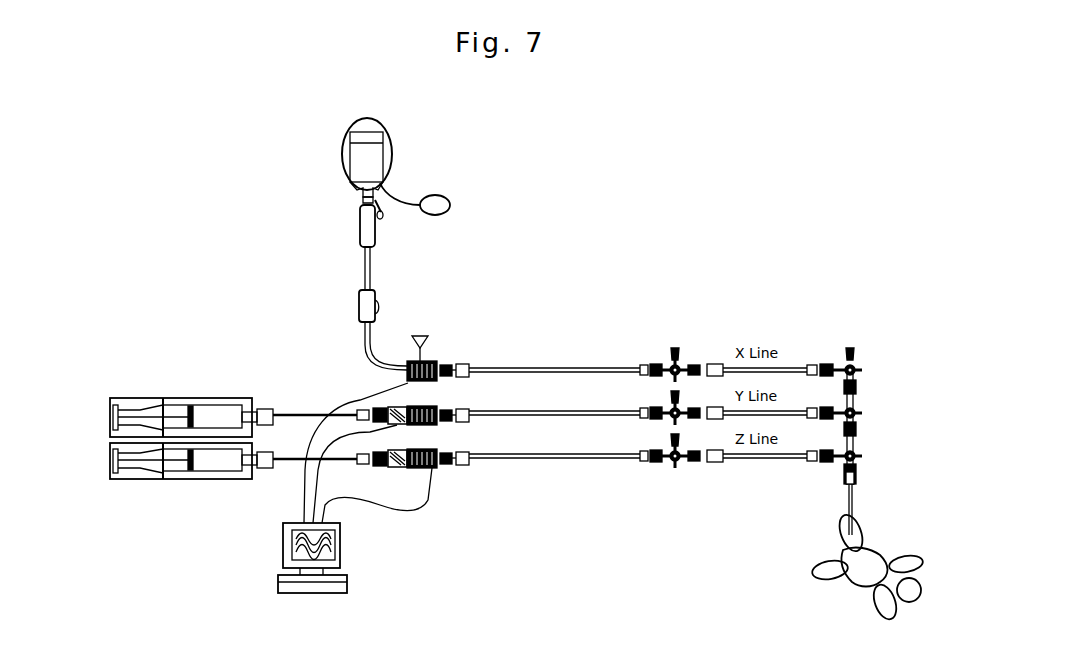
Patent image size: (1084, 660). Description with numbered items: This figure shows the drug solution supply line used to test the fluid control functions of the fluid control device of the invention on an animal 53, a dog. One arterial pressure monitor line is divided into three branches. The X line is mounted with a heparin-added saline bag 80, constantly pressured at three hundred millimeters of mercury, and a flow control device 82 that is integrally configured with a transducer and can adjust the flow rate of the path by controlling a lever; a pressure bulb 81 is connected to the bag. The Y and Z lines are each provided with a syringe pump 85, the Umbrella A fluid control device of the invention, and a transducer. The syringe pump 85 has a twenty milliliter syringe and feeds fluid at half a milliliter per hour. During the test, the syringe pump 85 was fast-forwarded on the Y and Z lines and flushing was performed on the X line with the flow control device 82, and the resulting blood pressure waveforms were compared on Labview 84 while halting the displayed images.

The heparin-added saline bag 80 is at (371, 160).
The pressure bulb 81 is at (391, 171).
The flow control device 82 is at (430, 358).
The Labview 84 is at (340, 540).
The syringe pump 85 is at (178, 398).
The animal 53 is at (840, 530).